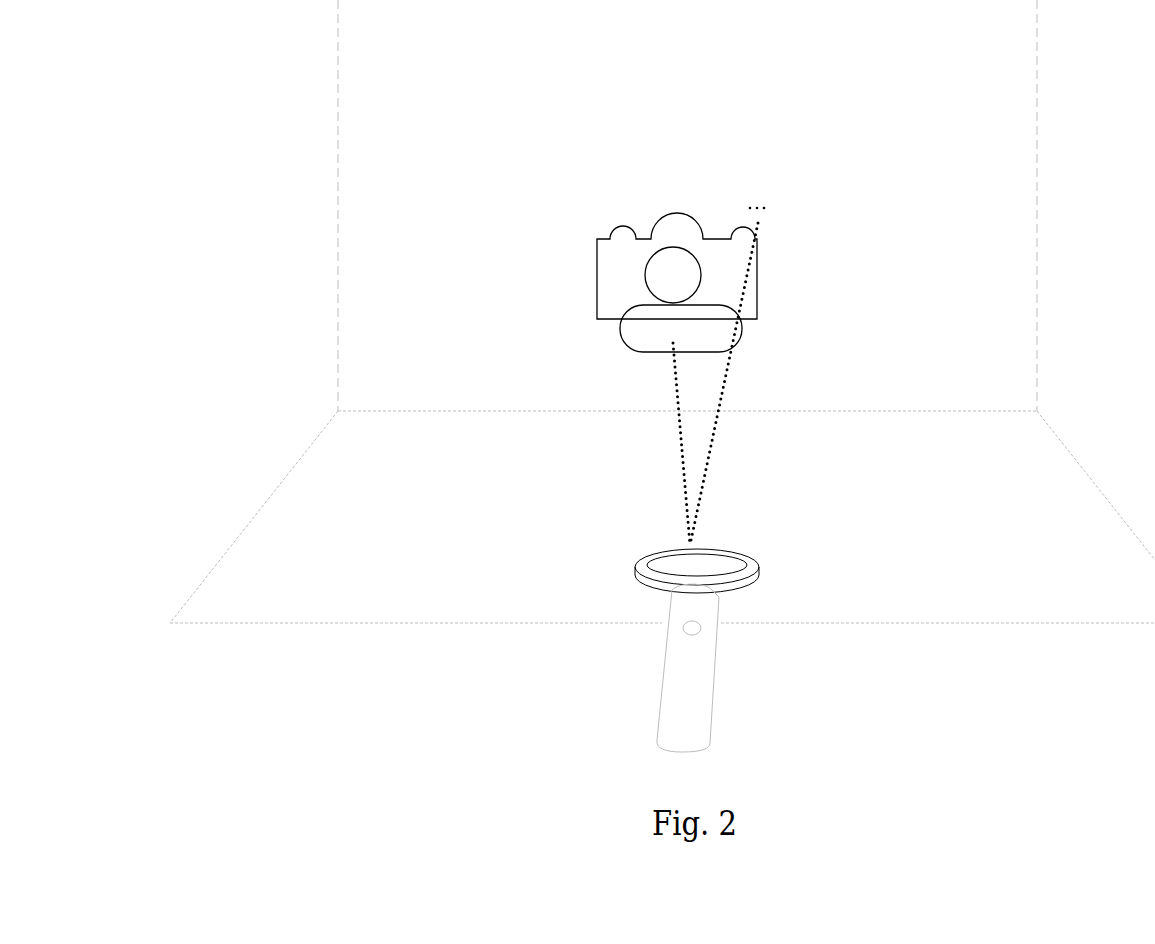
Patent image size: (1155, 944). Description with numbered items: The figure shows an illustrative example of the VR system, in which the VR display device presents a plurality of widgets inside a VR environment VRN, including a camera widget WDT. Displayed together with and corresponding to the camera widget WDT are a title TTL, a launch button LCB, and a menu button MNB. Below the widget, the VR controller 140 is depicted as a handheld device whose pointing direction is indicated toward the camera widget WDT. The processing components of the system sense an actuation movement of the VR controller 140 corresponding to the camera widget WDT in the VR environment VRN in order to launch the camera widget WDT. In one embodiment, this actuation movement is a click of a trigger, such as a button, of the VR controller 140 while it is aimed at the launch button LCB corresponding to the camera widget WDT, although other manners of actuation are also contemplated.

The VR environment VRN is at (262, 87).
The title TTL is at (532, 188).
The menu button MNB is at (757, 197).
The camera widget WDT is at (597, 270).
The launch button LCB is at (643, 345).
The VR controller 140 is at (663, 700).